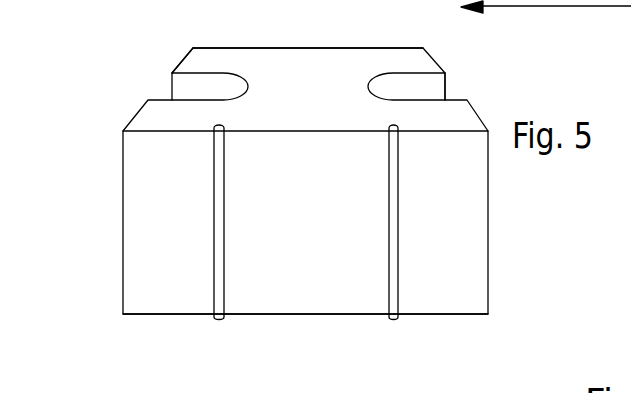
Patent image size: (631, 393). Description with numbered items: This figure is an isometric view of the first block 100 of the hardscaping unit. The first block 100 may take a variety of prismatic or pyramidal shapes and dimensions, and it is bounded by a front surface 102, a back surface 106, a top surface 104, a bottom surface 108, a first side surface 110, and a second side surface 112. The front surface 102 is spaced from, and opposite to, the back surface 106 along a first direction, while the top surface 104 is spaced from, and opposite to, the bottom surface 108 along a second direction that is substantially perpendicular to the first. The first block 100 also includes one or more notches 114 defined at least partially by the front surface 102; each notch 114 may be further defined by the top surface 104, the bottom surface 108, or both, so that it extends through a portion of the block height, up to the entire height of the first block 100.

The first block 100 is at (518, 218).
The front surface 102 is at (137, 237).
The top surface 104 is at (333, 75).
The back surface 106 is at (273, 48).
The bottom surface 108 is at (288, 314).
The first side surface 110 is at (185, 60).
The second side surface 112 is at (445, 88).
The notch 114 is at (217, 316).